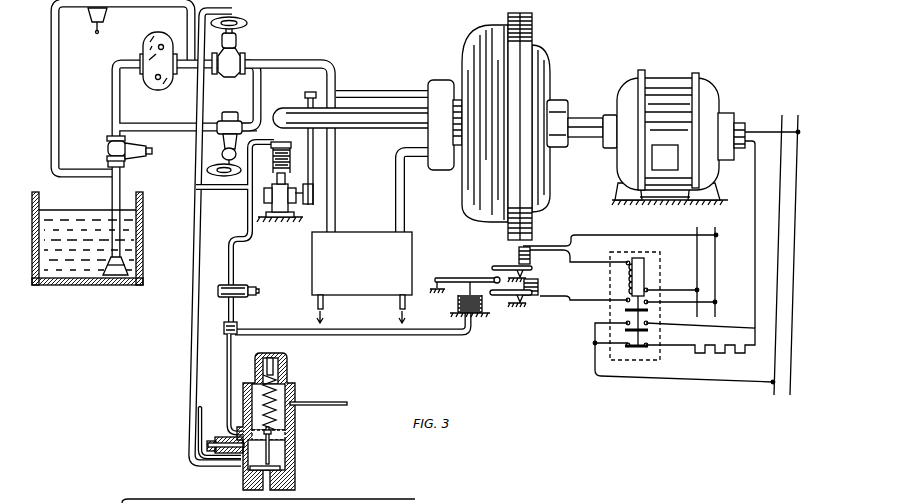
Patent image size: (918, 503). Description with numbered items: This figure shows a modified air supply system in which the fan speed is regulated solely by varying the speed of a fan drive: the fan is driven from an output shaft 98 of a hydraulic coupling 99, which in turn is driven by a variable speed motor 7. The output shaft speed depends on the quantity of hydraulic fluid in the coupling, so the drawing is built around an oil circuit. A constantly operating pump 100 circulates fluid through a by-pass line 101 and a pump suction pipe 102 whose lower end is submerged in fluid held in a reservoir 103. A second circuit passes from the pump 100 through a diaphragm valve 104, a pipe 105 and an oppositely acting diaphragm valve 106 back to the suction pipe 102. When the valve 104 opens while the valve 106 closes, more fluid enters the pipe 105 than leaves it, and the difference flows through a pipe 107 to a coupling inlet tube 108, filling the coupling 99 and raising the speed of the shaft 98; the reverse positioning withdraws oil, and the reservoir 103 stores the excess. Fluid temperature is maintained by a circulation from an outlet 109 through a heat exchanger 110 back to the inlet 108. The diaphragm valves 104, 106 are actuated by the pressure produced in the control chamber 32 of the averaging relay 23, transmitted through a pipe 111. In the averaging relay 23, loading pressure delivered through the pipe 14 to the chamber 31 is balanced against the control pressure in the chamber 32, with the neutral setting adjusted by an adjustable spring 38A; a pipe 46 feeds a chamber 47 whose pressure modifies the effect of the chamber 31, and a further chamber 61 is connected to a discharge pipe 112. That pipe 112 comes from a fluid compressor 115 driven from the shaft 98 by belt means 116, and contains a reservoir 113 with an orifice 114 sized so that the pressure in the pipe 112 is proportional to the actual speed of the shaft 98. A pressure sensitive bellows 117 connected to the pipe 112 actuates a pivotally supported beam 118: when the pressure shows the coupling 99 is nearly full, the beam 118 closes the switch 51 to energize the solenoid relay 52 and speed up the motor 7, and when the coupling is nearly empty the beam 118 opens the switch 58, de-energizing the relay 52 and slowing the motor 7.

The variable speed motor 7 is at (713, 92).
The pipe 14 is at (307, 402).
The averaging relay 23 is at (290, 373).
The chamber 31 is at (278, 413).
The control chamber 32 is at (283, 468).
The adjustable spring 38A is at (262, 408).
The pipe 46 is at (196, 418).
The chamber 47 is at (283, 448).
The mercury switch 51 is at (511, 265).
The solenoid relay 52 is at (664, 279).
The switch 58 is at (513, 298).
The chamber 61 is at (296, 440).
The output shaft 98 is at (357, 133).
The hydraulic coupling 99 is at (550, 57).
The pump 100 is at (152, 34).
The by-pass line 101 is at (62, 100).
The pump suction pipe 102 is at (113, 114).
The reservoir 103 is at (134, 248).
The diaphragm valve 104 is at (241, 53).
The pipe 105 is at (266, 98).
The diaphragm valve 106 is at (244, 114).
The pipe 107 is at (294, 61).
The coupling inlet tube 108 is at (384, 90).
The outlet 109 is at (405, 203).
The heat exchanger 110 is at (413, 258).
The pipe 111 is at (188, 383).
The discharge pipe 112 is at (233, 306).
The reservoir 113 is at (240, 284).
The orifice 114 is at (252, 290).
The fluid compressor 115 is at (272, 170).
The belt means 116 is at (312, 174).
The pressure sensitive bellows 117 is at (460, 301).
The beam 118 is at (460, 278).